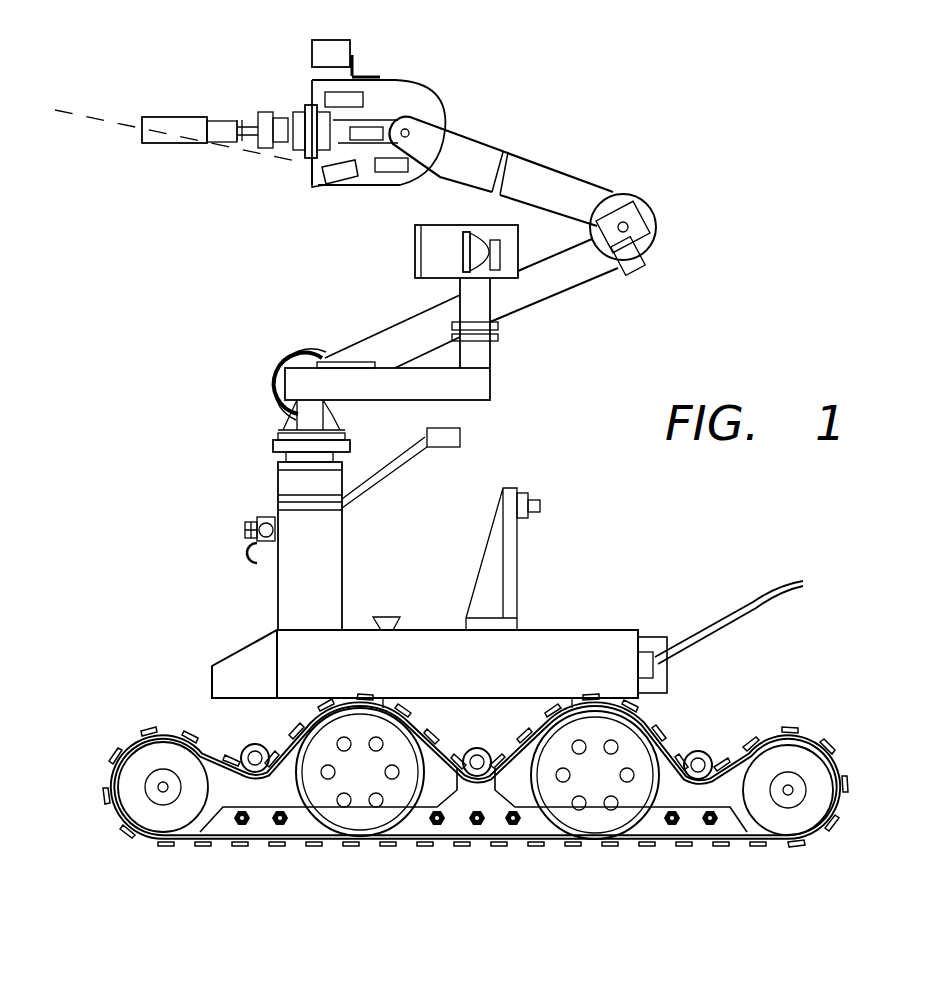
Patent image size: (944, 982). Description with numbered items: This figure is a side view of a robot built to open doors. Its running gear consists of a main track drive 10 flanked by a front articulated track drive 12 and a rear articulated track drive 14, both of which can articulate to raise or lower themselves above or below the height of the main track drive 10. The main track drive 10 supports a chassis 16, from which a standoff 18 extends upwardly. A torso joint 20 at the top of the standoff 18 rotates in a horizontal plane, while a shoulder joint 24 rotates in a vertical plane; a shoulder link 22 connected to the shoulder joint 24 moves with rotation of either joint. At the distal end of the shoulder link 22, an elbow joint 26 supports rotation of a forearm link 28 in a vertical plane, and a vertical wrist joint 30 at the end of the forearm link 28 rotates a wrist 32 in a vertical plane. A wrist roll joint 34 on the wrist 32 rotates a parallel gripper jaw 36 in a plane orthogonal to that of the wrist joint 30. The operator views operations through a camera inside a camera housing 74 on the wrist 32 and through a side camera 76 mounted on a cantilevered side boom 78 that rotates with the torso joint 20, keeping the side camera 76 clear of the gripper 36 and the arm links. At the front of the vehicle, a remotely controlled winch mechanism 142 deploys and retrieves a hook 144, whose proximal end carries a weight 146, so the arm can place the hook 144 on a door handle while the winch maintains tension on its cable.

The main track drive 10 is at (472, 825).
The front articulated track drive 12 is at (160, 782).
The rear articulated track drive 14 is at (790, 790).
The chassis 16 is at (585, 632).
The standoff 18 is at (327, 545).
The torso joint 20 is at (275, 443).
The shoulder link 22 is at (557, 292).
The shoulder joint 24 is at (277, 355).
The elbow joint 26 is at (635, 202).
The forearm link 28 is at (543, 173).
The vertical wrist joint 30 is at (427, 135).
The wrist 32 is at (322, 175).
The wrist roll joint 34 is at (307, 105).
The parallel gripper jaw 36 is at (192, 120).
The camera housing 74 is at (388, 75).
The side camera 76 is at (427, 252).
The cantilevered side boom 78 is at (407, 332).
The winch mechanism 142 is at (263, 517).
The hook 144 is at (240, 558).
The weight 146 is at (245, 530).